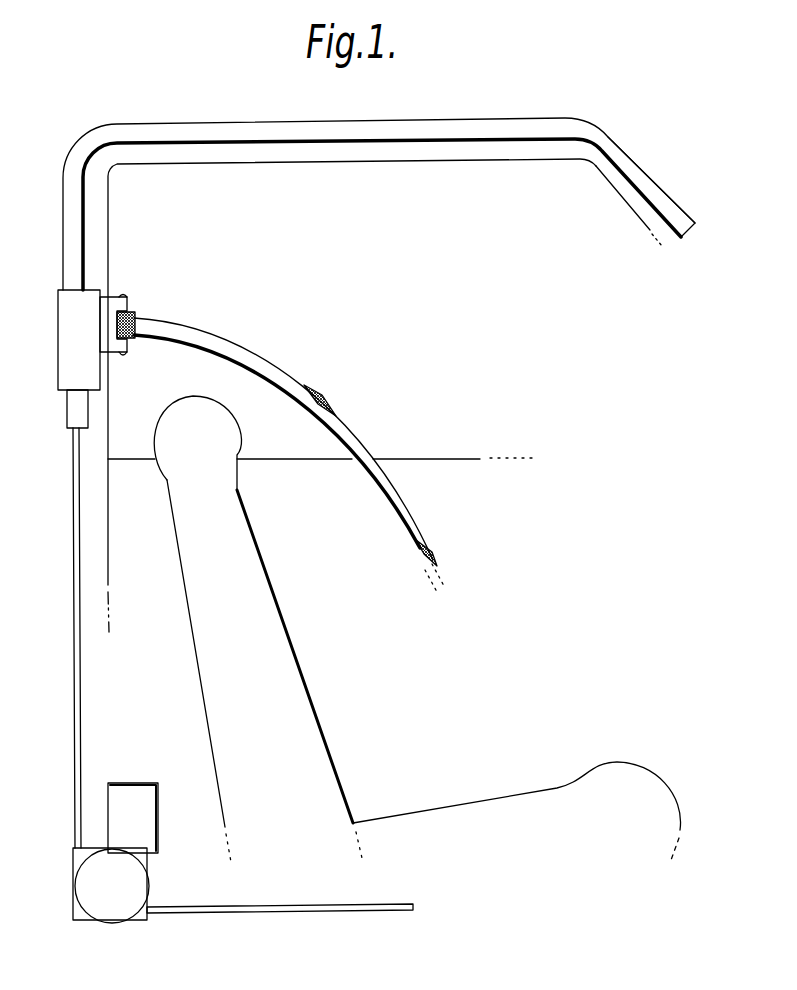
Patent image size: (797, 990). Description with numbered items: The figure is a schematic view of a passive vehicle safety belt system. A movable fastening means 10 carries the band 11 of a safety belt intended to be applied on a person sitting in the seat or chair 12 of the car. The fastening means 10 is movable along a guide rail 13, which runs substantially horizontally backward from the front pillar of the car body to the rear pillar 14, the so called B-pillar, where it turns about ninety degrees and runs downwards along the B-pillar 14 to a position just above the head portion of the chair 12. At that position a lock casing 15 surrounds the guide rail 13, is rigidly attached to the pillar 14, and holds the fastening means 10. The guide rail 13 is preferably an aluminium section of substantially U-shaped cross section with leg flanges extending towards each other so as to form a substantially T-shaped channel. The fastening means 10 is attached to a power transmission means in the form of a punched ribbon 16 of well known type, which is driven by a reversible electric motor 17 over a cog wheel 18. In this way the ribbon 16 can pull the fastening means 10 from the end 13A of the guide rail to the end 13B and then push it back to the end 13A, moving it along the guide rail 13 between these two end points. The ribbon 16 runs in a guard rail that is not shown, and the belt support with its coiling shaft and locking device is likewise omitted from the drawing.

The fastening means 10 is at (110, 297).
The band 11 is at (237, 341).
The seat or chair 12 is at (443, 812).
The guide rail 13 is at (363, 121).
The end point of guide rail 13A is at (637, 160).
The end point of guide rail 13B is at (67, 422).
The rear pillar 14 is at (92, 218).
The lock casing 15 is at (66, 310).
The punched ribbon 16 is at (72, 540).
The reversible electric motor 17 is at (133, 787).
The cog wheel 18 is at (97, 902).